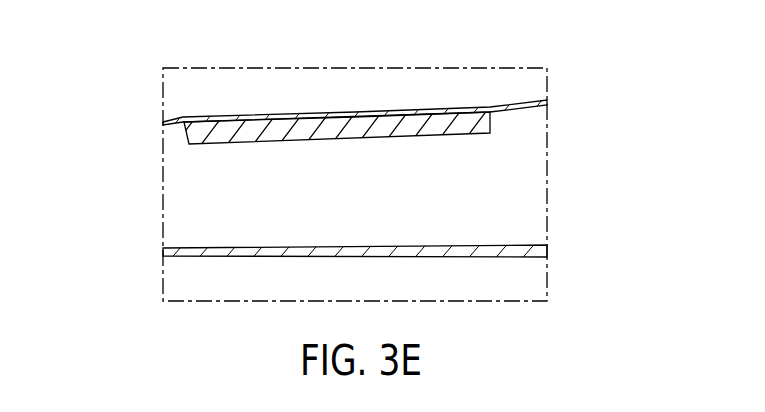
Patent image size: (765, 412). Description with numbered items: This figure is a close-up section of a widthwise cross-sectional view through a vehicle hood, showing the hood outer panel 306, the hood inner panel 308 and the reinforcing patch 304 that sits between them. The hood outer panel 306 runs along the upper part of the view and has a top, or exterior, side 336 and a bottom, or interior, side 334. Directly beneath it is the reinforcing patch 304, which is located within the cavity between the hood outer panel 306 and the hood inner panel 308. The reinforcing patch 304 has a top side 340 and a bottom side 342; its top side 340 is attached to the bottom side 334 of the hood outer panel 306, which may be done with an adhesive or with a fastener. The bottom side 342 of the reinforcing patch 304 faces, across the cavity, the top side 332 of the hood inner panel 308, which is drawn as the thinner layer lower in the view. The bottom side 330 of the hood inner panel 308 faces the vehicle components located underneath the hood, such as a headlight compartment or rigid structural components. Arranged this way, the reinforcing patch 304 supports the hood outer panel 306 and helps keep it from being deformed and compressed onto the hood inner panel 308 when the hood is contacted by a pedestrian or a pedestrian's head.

The reinforcing patch 304 is at (480, 121).
The hood outer panel 306 is at (163, 124).
The hood inner panel 308 is at (185, 254).
The bottom side of the hood inner panel 330 is at (534, 263).
The top side of the hood inner panel 332 is at (526, 240).
The bottom side of the hood outer panel 334 is at (528, 123).
The top side of the hood outer panel 336 is at (359, 92).
The top side of the reinforcing patch 340 is at (215, 112).
The bottom side of the reinforcing patch 342 is at (212, 146).